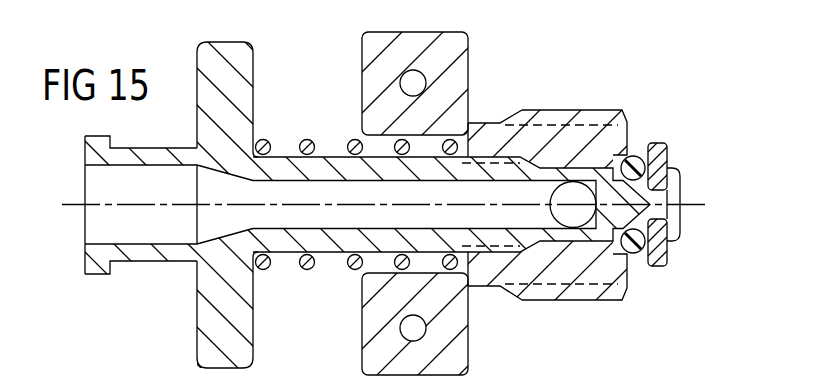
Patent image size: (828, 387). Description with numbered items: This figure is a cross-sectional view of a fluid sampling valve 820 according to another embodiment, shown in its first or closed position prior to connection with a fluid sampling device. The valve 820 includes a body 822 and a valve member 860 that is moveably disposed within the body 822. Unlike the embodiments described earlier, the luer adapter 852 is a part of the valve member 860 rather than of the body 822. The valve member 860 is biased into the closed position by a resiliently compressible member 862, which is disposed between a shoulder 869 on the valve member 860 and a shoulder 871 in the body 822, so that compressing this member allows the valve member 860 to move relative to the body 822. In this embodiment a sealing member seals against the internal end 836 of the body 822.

The valve 820 is at (627, 73).
The body 822 is at (472, 103).
The internal end 836 is at (630, 268).
The luer adapter 852 is at (188, 342).
The valve member 860 is at (290, 157).
The resiliently compressible member 862 is at (307, 271).
The shoulder 869 is at (257, 284).
The shoulder 871 is at (448, 273).